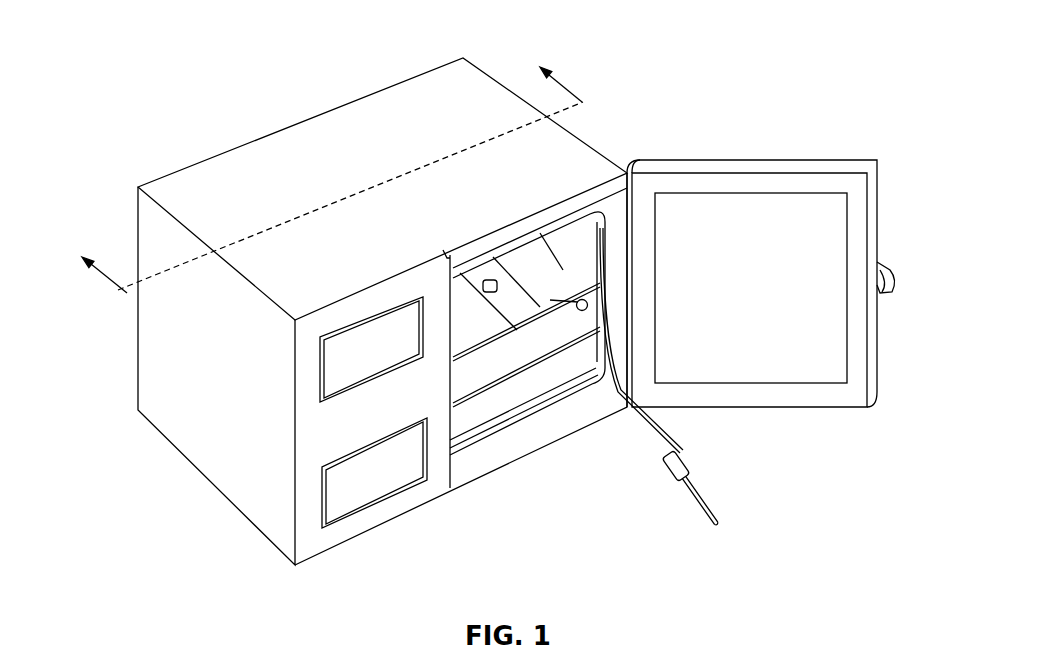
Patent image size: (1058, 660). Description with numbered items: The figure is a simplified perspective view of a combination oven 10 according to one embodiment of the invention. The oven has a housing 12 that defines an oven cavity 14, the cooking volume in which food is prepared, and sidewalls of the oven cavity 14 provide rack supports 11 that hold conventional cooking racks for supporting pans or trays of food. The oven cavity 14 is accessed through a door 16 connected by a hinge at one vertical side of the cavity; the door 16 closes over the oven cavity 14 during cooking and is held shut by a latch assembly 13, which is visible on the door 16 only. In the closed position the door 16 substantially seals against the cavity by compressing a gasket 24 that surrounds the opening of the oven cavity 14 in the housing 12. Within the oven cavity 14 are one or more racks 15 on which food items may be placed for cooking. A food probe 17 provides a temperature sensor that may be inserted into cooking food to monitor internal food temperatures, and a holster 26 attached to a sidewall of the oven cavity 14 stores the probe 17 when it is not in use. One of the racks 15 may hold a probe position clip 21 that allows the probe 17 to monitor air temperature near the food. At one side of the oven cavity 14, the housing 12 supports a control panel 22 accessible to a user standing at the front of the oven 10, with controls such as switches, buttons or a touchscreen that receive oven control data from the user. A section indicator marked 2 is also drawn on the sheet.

The combination oven 10 is at (134, 53).
The rack supports 11 is at (598, 232).
The housing 12 is at (362, 115).
The latch assembly 13 is at (895, 283).
The oven cavity 14 is at (573, 397).
The racks 15 is at (500, 335).
The door 16 is at (757, 408).
The food probe 17 is at (683, 475).
The probe position clip 21 is at (485, 280).
The control panel 22 is at (388, 506).
The gasket 24 is at (472, 453).
The holster 26 is at (578, 298).
The section line 2- 2 is at (324, 168).